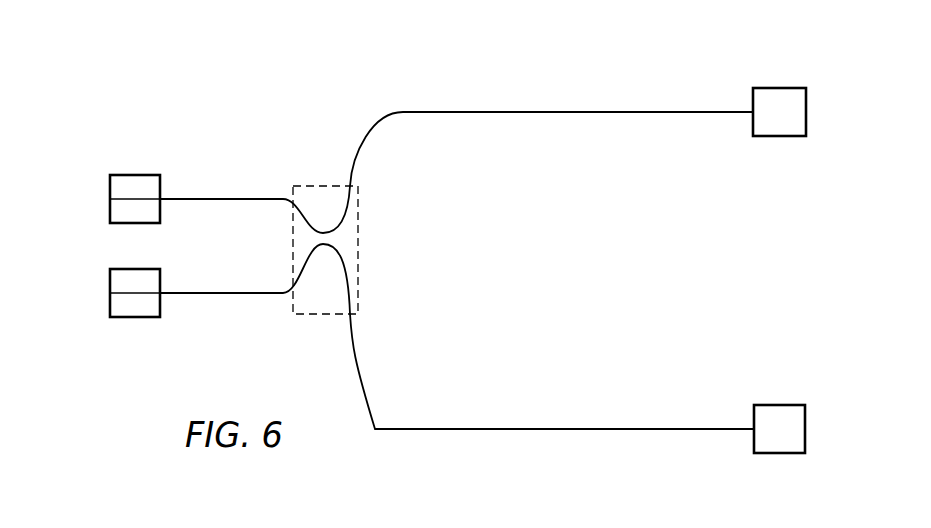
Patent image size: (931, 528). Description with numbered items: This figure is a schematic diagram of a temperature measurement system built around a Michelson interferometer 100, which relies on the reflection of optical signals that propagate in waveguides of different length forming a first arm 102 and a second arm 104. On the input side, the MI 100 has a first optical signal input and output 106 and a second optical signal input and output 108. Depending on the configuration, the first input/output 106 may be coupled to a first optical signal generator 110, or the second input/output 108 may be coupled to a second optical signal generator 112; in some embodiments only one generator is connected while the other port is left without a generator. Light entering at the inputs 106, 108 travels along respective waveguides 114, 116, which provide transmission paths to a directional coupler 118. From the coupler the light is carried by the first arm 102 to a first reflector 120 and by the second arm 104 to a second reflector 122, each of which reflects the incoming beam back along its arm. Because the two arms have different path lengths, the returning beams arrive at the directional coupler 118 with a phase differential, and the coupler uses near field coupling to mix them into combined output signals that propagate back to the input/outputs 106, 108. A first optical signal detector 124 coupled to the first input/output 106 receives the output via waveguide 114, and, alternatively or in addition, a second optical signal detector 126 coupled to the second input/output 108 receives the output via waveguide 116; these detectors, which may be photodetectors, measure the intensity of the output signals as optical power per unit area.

The Michelson interferometer 100 is at (312, 73).
The first arm 102 is at (572, 112).
The second arm 104 is at (577, 430).
The first optical signal input and output 106 is at (163, 197).
The second optical signal input and output 108 is at (163, 292).
The first optical signal generator 110 is at (137, 173).
The second optical signal generator 112 is at (140, 268).
The waveguide 114 is at (210, 197).
The waveguide 116 is at (210, 292).
The directional coupler 118 is at (332, 187).
The first reflector 120 is at (780, 87).
The second reflector 122 is at (778, 405).
The first optical signal detector 124 is at (109, 212).
The second optical signal detector 126 is at (109, 307).